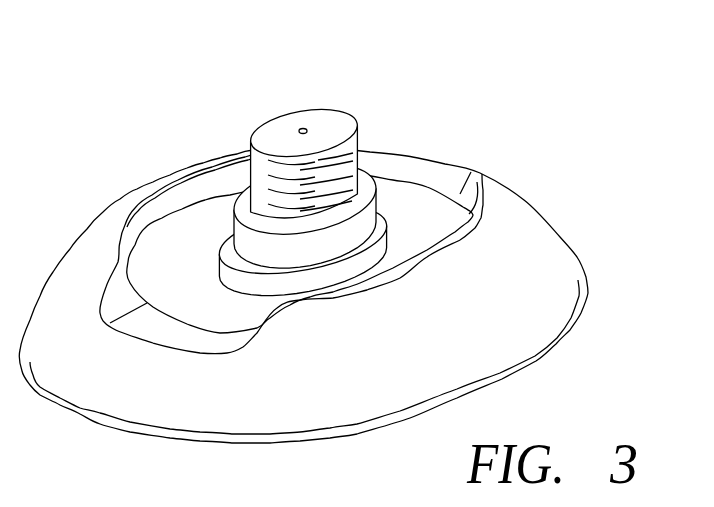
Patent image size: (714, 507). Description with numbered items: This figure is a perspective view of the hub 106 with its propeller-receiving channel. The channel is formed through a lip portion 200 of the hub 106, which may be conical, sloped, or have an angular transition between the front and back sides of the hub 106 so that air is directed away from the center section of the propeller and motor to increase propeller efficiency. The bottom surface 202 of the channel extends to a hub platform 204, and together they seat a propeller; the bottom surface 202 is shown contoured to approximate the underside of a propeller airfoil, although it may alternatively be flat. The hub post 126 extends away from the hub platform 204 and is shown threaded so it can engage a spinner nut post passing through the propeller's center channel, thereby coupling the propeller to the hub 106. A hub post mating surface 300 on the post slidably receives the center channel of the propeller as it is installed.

The hub 106 is at (339, 240).
The hub post 126 is at (266, 132).
The lip portion 200 is at (547, 250).
The bottom surface 202 is at (439, 173).
The hub platform 204 is at (180, 242).
The hub post mating surface 300 is at (328, 248).